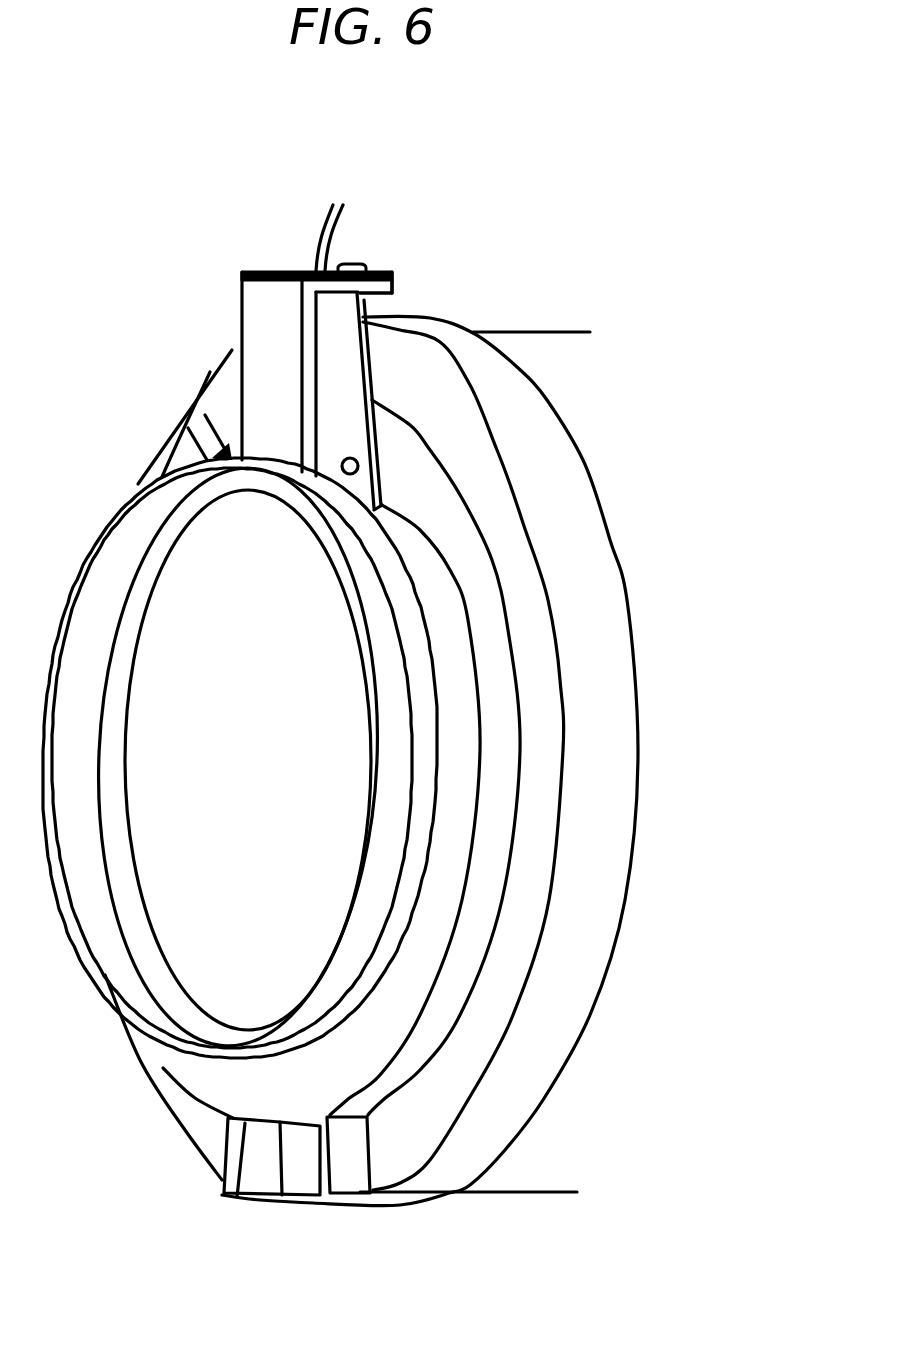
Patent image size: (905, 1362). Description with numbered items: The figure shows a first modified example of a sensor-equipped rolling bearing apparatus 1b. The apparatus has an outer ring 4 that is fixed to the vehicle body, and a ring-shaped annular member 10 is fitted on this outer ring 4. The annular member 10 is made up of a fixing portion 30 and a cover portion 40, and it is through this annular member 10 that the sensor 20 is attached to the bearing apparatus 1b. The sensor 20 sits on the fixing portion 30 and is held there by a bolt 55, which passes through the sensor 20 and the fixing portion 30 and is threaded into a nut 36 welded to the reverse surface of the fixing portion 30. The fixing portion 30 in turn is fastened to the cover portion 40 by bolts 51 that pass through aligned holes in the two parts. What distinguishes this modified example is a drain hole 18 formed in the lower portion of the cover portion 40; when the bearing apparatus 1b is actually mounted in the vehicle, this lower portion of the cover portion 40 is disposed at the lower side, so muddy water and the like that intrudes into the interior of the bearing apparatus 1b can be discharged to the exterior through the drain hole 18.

The sensor-equipped rolling bearing apparatus 1b is at (604, 212).
The outer ring 4 is at (542, 1168).
The annular member 10 is at (98, 270).
The drain hole 18 is at (255, 1177).
The sensor 20 is at (272, 272).
The fixing portion 30 is at (230, 382).
The nut 36 is at (393, 307).
The cover portion 40 is at (200, 402).
The bolt 51 is at (213, 427).
The bolt 55 is at (353, 268).